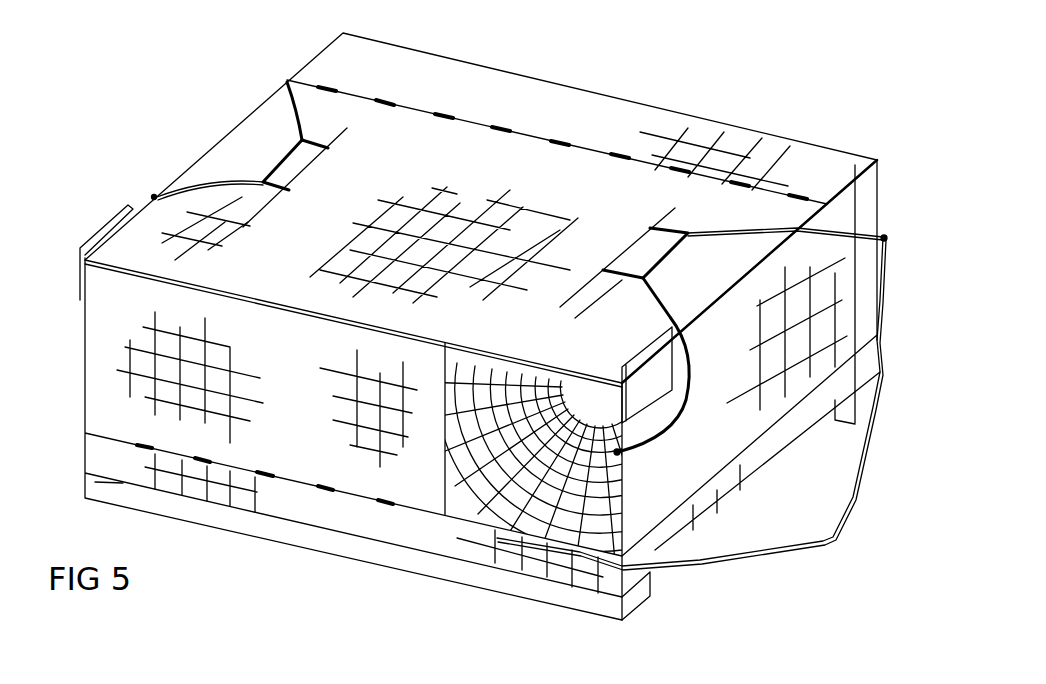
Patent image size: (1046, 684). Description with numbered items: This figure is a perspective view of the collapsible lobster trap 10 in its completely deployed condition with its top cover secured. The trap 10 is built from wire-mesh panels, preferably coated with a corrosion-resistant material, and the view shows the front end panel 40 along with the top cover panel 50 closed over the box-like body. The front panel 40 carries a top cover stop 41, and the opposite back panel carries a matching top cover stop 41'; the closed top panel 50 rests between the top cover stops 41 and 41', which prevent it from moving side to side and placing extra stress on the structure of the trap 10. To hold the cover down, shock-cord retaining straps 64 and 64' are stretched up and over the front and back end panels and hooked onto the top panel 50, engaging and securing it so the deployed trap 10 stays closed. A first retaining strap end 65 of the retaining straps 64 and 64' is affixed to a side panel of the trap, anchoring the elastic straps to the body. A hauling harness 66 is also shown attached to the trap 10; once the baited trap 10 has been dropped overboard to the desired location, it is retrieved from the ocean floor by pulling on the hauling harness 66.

The collapsible lobster trap 10 is at (234, 61).
The top cover panel 50 is at (573, 97).
The front end panel 40 is at (857, 197).
The top cover stop 41 is at (630, 372).
The top cover stop 41' is at (98, 245).
The shock-cord retaining strap 64 is at (723, 249).
The shock-cord retaining strap 64' is at (250, 163).
The first retaining strap end 65 is at (867, 247).
The hauling harness 66 is at (830, 535).